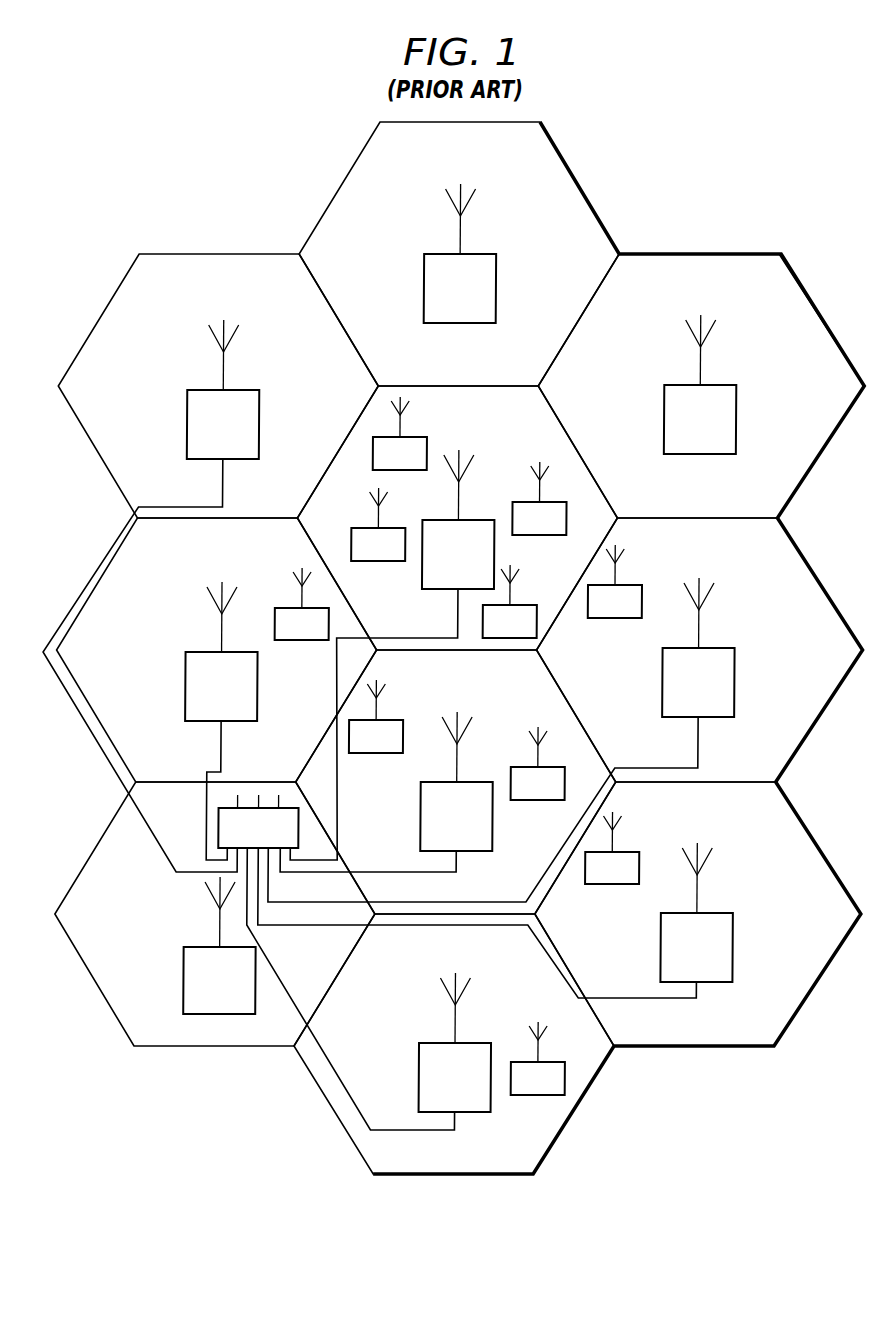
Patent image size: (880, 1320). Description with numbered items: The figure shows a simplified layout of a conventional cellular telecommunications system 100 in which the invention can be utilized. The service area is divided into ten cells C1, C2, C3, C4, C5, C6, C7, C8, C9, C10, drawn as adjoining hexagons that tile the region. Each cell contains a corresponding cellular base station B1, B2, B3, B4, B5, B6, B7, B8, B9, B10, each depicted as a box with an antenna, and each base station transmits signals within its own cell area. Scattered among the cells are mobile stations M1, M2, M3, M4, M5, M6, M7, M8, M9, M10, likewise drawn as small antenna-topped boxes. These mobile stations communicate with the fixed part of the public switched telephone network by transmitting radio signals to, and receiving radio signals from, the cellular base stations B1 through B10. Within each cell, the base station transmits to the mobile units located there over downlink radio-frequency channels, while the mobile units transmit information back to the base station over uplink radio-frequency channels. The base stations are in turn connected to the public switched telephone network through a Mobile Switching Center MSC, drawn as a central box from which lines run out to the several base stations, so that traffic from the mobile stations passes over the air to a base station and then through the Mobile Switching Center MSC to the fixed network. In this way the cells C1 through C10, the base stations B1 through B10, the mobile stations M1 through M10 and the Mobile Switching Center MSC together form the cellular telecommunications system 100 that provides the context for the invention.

The cellular telecommunications system 100 is at (624, 156).
The cell C1 is at (400, 639).
The cell C2 is at (640, 507).
The cell C3 is at (640, 769).
The cell C4 is at (400, 903).
The cell C5 is at (163, 771).
The cell C6 is at (163, 507).
The cell C7 is at (400, 375).
The cell C8 is at (640, 1035).
The cell C9 is at (400, 1164).
The cell C10 is at (173, 1035).
The cellular base station B1 is at (392, 655).
The cellular base station B2 is at (700, 384).
The cellular base station B3 is at (501, 740).
The cellular base station B4 is at (386, 792).
The cellular base station B5 is at (221, 721).
The cellular base station B6 is at (151, 596).
The cellular base station B7 is at (460, 253).
The cellular base station B8 is at (495, 920).
The cellular base station B9 is at (368, 989).
The cellular base station B10 is at (219, 945).
The mobile station M1 is at (612, 848).
The mobile station M2 is at (302, 604).
The mobile station M3 is at (378, 524).
The mobile station M4 is at (539, 498).
The mobile station M5 is at (615, 581).
The mobile station M6 is at (400, 433).
The mobile station M7 is at (510, 601).
The mobile station M8 is at (538, 763).
The mobile station M9 is at (376, 716).
The mobile station M10 is at (538, 1058).
The Mobile Switching Center MSC is at (258, 821).